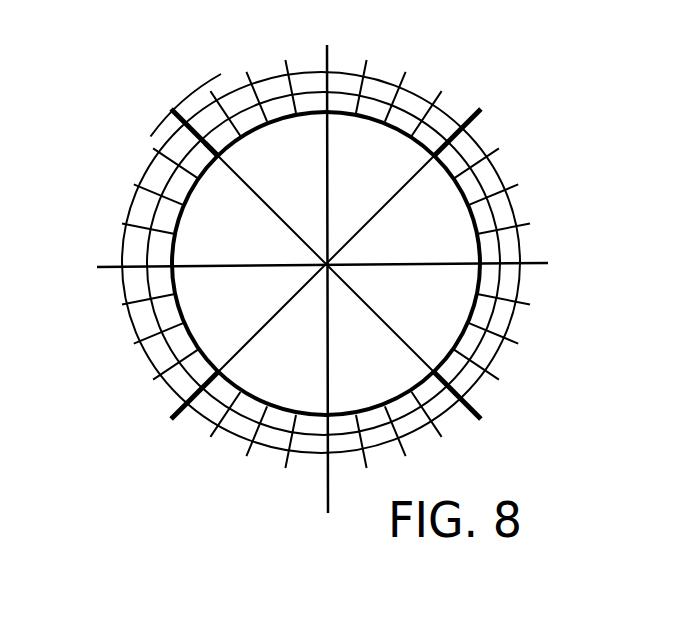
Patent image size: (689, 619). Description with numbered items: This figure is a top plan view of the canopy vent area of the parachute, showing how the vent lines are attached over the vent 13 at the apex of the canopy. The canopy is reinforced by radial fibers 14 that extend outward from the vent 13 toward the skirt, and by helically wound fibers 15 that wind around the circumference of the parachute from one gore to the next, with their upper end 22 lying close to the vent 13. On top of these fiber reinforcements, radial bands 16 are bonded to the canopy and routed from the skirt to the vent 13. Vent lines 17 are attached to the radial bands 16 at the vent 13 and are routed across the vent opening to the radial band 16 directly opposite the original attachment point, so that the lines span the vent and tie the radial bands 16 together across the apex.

The vent 13 is at (326, 229).
The radial fibers 14 is at (528, 305).
The helically wound fibers 15 is at (500, 352).
The radial bands 16 is at (330, 58).
The vent lines 17 is at (450, 265).
The upper end of fibers 22 is at (220, 157).